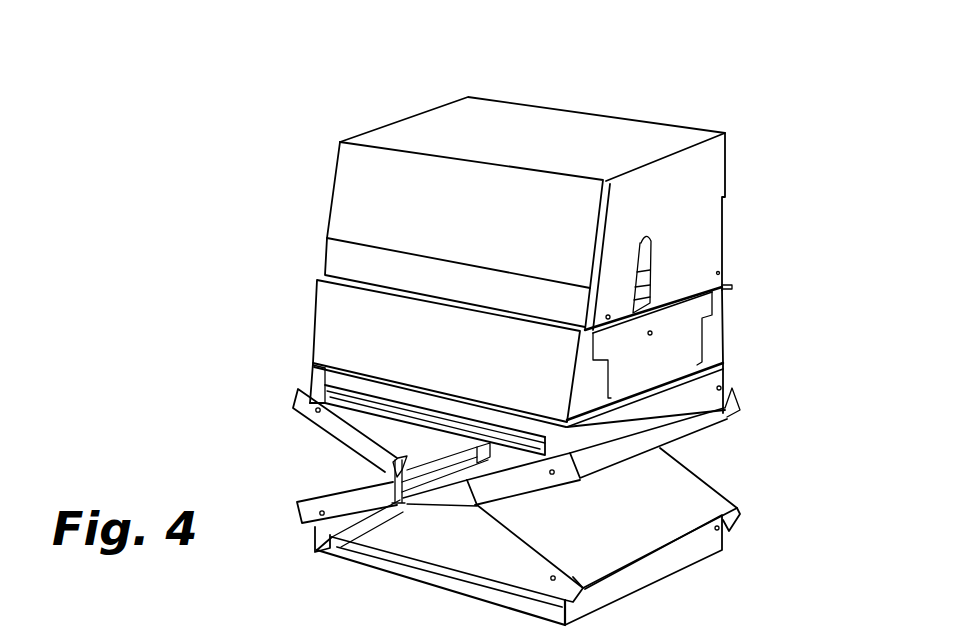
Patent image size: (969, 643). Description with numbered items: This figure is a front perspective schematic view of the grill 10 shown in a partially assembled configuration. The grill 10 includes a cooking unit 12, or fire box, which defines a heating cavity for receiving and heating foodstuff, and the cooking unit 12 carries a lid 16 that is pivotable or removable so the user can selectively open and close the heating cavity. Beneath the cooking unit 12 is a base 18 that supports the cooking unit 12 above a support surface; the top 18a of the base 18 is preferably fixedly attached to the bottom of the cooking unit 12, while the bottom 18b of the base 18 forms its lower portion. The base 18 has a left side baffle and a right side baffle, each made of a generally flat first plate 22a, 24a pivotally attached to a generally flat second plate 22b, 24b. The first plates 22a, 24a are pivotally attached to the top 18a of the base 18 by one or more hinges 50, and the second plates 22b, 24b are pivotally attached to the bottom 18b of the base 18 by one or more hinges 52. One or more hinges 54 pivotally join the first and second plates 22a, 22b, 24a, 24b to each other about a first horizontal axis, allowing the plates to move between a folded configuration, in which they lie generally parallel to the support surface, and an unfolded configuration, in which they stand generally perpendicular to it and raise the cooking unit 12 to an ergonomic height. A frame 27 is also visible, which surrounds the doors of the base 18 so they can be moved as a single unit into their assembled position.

The grill 10 is at (683, 83).
The cooking unit 12 is at (264, 272).
The lid 16 is at (343, 187).
The base 18 is at (178, 405).
The top of the base 18a is at (317, 388).
The bottom of the base 18b is at (340, 550).
The frame 27 is at (312, 370).
The first plate of the left side baffle 22a is at (336, 431).
The second plate of the left side baffle 22b is at (322, 493).
The first plate of the right side baffle 24a is at (698, 428).
The second plate of the right side baffle 24b is at (700, 500).
The hinge 50 is at (316, 410).
The hinge 52 is at (320, 513).
The hinge 54 is at (393, 477).